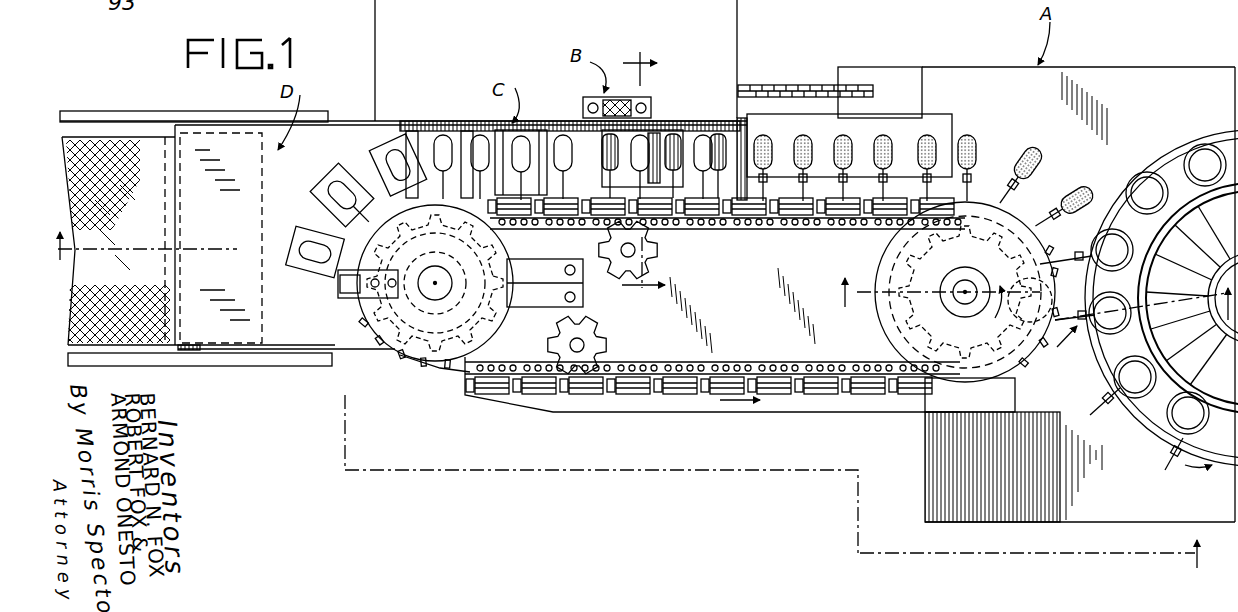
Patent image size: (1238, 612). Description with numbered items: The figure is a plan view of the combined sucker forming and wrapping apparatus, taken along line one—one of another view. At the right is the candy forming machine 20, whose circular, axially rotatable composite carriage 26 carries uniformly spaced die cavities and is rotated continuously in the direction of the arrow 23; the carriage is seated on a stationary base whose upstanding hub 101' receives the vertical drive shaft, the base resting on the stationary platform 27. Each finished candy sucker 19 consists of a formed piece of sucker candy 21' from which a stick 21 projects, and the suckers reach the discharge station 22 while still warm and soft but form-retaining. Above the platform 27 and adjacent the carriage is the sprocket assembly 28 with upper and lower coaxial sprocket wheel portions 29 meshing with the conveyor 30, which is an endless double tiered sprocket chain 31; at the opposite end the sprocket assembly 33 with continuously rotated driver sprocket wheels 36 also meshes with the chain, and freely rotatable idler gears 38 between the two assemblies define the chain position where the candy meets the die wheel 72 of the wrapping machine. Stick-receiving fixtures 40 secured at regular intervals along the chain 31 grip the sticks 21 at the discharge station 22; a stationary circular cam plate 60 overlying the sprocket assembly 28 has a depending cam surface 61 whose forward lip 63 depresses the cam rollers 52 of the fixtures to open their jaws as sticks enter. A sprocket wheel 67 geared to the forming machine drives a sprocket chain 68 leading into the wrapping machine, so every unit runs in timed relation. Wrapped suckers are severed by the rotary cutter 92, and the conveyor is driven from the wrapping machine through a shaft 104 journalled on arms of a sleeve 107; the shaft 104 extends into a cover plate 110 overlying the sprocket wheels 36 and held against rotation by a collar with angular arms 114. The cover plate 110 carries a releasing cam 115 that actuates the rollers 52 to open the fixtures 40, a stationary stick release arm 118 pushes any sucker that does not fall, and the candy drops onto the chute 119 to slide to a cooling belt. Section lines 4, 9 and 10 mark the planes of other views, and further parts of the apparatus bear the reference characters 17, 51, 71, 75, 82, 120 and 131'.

The section line 4- 4 is at (637, 400).
The section line 9- 9 is at (1021, 323).
The section line 10- 10 is at (643, 170).
The hub shaft 17 is at (1223, 298).
The candy sucker 19 is at (982, 142).
The candy forming machine 20 is at (1200, 130).
The stick 21 is at (994, 294).
The formed piece of sucker candy 21' is at (925, 176).
The discharge station 22 is at (1072, 255).
The arrow 23 is at (1220, 470).
The composite carriage 26 is at (1148, 170).
The stationary platform 27 is at (1100, 80).
The sprocket assembly 28 is at (898, 328).
The sprocket wheel portions 29 is at (947, 292).
The conveyor 30 is at (760, 226).
The endless double tiered sprocket chain 31 is at (790, 222).
The sprocket assembly 33 is at (445, 258).
The driver sprocket wheels 36 is at (507, 226).
The idler gears 38 is at (658, 250).
The stick-receiving fixtures 40 is at (725, 214).
The holder block 51 is at (586, 390).
The cam roller 52 is at (522, 392).
The cam plate 60 is at (890, 246).
The cam surface 61 is at (1010, 345).
The forward lip 63 is at (1015, 310).
The sprocket wheel 67 is at (862, 86).
The sprocket chain 68 is at (785, 86).
The frame 71 is at (395, 118).
The die wheel 72 is at (690, 120).
The bottle 75 is at (650, 125).
The housing 82 is at (730, 120).
The rotary cutter 92 is at (555, 125).
The upstanding hub 101' is at (1180, 246).
The shaft 104 is at (435, 286).
The sleeve 107 is at (425, 125).
The cover plate 110 is at (470, 343).
The arms 114 is at (538, 285).
The releasing cam 115 is at (355, 172).
The stick release arm 118 is at (338, 285).
The chute 119 is at (304, 348).
The hopper 120 is at (122, 150).
The pocket plate 131' is at (1113, 173).